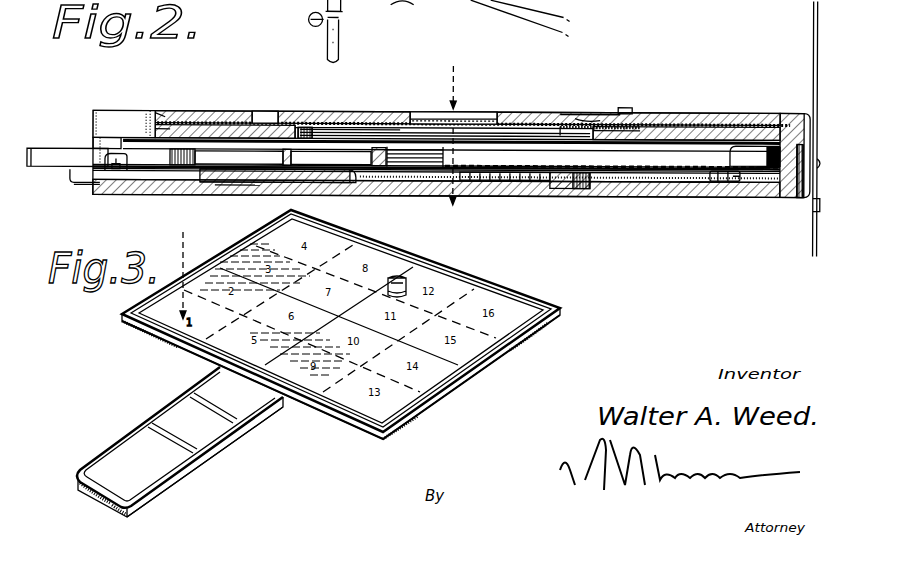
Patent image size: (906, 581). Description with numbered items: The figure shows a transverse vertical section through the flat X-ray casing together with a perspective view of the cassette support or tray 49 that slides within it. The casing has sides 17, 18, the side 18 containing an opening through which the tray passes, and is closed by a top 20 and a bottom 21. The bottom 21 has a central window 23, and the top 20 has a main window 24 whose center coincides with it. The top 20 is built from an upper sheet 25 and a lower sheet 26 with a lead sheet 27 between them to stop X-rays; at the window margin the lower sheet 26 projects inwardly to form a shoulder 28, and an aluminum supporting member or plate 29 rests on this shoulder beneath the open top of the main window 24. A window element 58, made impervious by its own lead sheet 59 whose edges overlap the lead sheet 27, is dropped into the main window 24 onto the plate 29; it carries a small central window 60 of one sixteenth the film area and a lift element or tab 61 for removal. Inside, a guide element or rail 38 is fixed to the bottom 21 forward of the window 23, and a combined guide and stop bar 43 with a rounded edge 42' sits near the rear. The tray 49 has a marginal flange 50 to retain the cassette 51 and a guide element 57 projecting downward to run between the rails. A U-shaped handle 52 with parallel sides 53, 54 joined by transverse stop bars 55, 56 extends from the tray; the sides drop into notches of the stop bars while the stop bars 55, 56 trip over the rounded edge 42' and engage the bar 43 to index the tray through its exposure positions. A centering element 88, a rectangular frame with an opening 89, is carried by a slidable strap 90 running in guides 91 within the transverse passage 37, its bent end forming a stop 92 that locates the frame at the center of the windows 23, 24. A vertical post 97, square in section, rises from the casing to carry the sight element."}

In FIG. 2, the side 17 is at (795, 190).
In FIG. 2, the side 18 is at (106, 150).
In FIG. 2, the top 20 is at (225, 100).
In FIG. 2, the bottom 21 is at (698, 193).
In FIG. 2, the window 23 is at (528, 188).
In FIG. 2, the main window 24 is at (271, 106).
In FIG. 2, the sheet 25 is at (163, 119).
In FIG. 2, the sheet 26 is at (172, 134).
In FIG. 2, the lead sheet 27 is at (148, 118).
In FIG. 2, the shoulder 28 is at (612, 130).
In FIG. 2, the supporting member or plate 29 is at (425, 124).
In FIG. 2, the groove or passage 37 is at (248, 186).
In FIG. 2, the guide element or rail 38 is at (614, 188).
In FIG. 2, the rear rounded edge 42' is at (86, 148).
In FIG. 2, the bar 43 is at (118, 170).
In FIG. 2, the cassette support or tray 49 is at (105, 186).
In FIG. 3, the cassette support or tray 49 is at (518, 286).
In FIG. 2, the marginal flange 50 is at (755, 156).
In FIG. 3, the marginal flange 50 is at (486, 360).
In FIG. 2, the cassette 51 is at (650, 162).
In FIG. 2, the handle 52 is at (30, 150).
In FIG. 3, the handle 52 is at (108, 503).
In FIG. 2, the side or bar 53 is at (60, 159).
In FIG. 3, the side or bar 53 is at (188, 471).
In FIG. 3, the side or bar 54 is at (122, 446).
In FIG. 2, the stop bar 55 is at (200, 173).
In FIG. 3, the stop bar 55 is at (177, 440).
In FIG. 2, the stop bar 56 is at (280, 164).
In FIG. 3, the stop bar 56 is at (212, 418).
In FIG. 2, the guide element 57 is at (730, 181).
In FIG. 3, the guide element 57 is at (397, 276).
In FIG. 2, the window element 58 is at (350, 130).
In FIG. 2, the lead sheet 59 is at (335, 118).
In FIG. 2, the window 60 is at (470, 119).
In FIG. 2, the lift element or tab 61 is at (608, 107).
In FIG. 2, the centering element 88 is at (356, 178).
In FIG. 2, the rectangular opening 89 is at (330, 172).
In FIG. 2, the slidable strap or bar 90 is at (88, 186).
In FIG. 2, the guide 91 is at (185, 172).
In FIG. 2, the stop 92 is at (70, 180).
In FIG. 2, the vertical post 97 is at (813, 1).